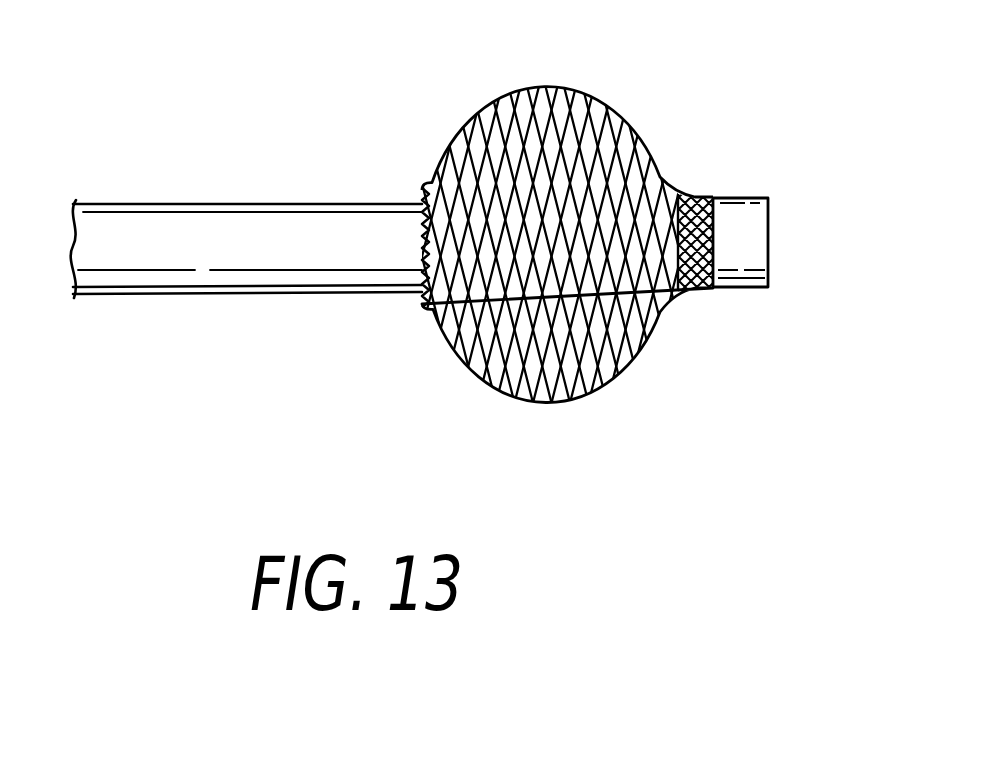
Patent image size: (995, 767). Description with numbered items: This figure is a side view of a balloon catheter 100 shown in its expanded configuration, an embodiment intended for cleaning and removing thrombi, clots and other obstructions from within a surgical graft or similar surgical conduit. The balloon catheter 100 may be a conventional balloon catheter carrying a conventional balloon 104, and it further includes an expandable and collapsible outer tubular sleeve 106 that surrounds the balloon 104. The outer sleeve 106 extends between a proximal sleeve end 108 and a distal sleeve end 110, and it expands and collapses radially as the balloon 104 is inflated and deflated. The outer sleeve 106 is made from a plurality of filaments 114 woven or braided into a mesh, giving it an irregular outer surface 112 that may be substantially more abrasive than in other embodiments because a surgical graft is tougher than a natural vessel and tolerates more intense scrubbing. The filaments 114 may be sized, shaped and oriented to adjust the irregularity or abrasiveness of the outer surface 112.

The balloon catheter 100 is at (258, 176).
The balloon 104 is at (528, 403).
The outer tubular sleeve 106 is at (623, 117).
The proximal sleeve end 108 is at (427, 312).
The distal sleeve end 110 is at (705, 197).
The irregular outer surface 112 is at (636, 361).
The filaments 114 is at (594, 106).